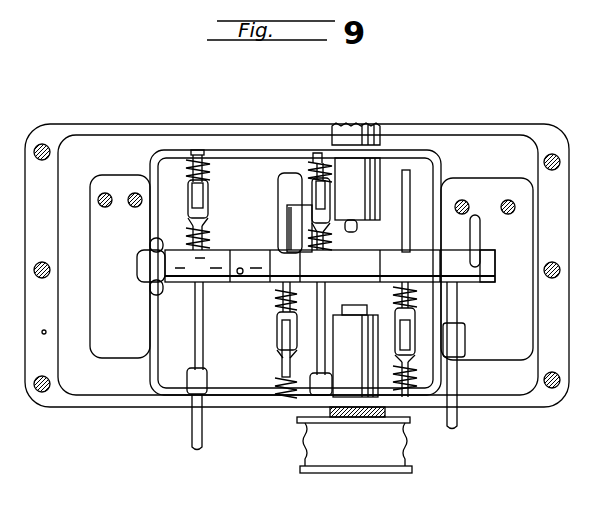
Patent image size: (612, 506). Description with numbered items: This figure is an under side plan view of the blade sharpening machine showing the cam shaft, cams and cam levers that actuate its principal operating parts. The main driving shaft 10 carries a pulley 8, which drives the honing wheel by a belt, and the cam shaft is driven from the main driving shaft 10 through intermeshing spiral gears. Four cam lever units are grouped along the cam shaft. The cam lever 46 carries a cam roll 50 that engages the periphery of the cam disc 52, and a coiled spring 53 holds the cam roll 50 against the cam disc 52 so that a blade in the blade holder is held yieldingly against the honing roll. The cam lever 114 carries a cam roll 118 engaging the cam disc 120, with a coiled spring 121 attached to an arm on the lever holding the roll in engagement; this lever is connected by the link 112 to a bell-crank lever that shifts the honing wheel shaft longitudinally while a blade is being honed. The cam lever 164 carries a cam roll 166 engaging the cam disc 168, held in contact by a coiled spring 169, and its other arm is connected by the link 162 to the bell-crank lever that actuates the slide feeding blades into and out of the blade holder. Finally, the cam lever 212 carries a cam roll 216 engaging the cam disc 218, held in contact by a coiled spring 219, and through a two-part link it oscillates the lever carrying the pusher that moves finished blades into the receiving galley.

The pulley 8 is at (405, 470).
The main driving shaft 10 is at (365, 224).
The cam lever 46 is at (325, 331).
The cam roll 50 is at (318, 193).
The cam disc 52 is at (330, 304).
The coiled spring 53 is at (330, 259).
The link 112 is at (205, 430).
The cam lever 114 is at (200, 370).
The cam roll 118 is at (197, 191).
The cam disc 120 is at (205, 294).
The coiled spring 121 is at (207, 236).
The link 162 is at (458, 428).
The cam lever 164 is at (426, 250).
The cam roll 166 is at (415, 328).
The cam disc 168 is at (412, 182).
The coiled spring 169 is at (417, 378).
The cam lever 212 is at (285, 198).
The cam roll 216 is at (283, 340).
The cam disc 218 is at (285, 358).
The coiled spring 219 is at (272, 312).